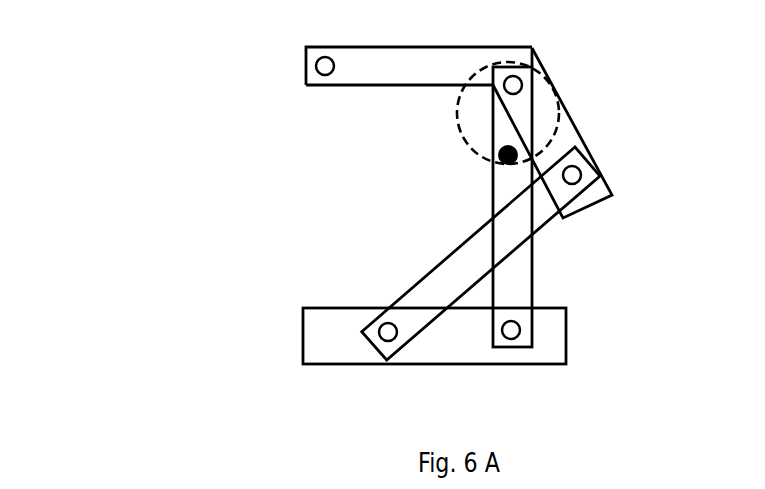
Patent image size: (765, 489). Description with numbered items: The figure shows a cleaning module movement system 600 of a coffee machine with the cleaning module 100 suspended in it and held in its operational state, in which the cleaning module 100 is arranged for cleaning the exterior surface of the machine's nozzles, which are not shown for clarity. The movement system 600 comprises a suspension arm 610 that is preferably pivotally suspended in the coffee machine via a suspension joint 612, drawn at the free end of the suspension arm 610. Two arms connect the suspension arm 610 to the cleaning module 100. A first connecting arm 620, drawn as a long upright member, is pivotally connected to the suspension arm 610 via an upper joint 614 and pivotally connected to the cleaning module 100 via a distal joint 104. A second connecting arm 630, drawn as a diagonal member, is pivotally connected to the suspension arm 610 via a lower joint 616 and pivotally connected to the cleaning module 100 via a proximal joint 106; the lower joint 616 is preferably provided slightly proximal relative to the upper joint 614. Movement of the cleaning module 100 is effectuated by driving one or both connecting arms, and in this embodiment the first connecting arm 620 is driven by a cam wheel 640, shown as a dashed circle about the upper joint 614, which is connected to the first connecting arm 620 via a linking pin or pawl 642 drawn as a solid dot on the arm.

The cleaning module movement system 600 is at (68, 40).
The cleaning module 100 is at (316, 353).
The distal joint 104 is at (388, 332).
The proximal joint 106 is at (511, 330).
The suspension arm 610 is at (306, 83).
The suspension joint 612 is at (325, 66).
The upper joint 614 is at (513, 85).
The lower joint 616 is at (572, 175).
The first connecting arm 620 is at (522, 293).
The second connecting arm 630 is at (423, 293).
The cam wheel 640 is at (562, 122).
The linking pin or pawl 642 is at (508, 155).